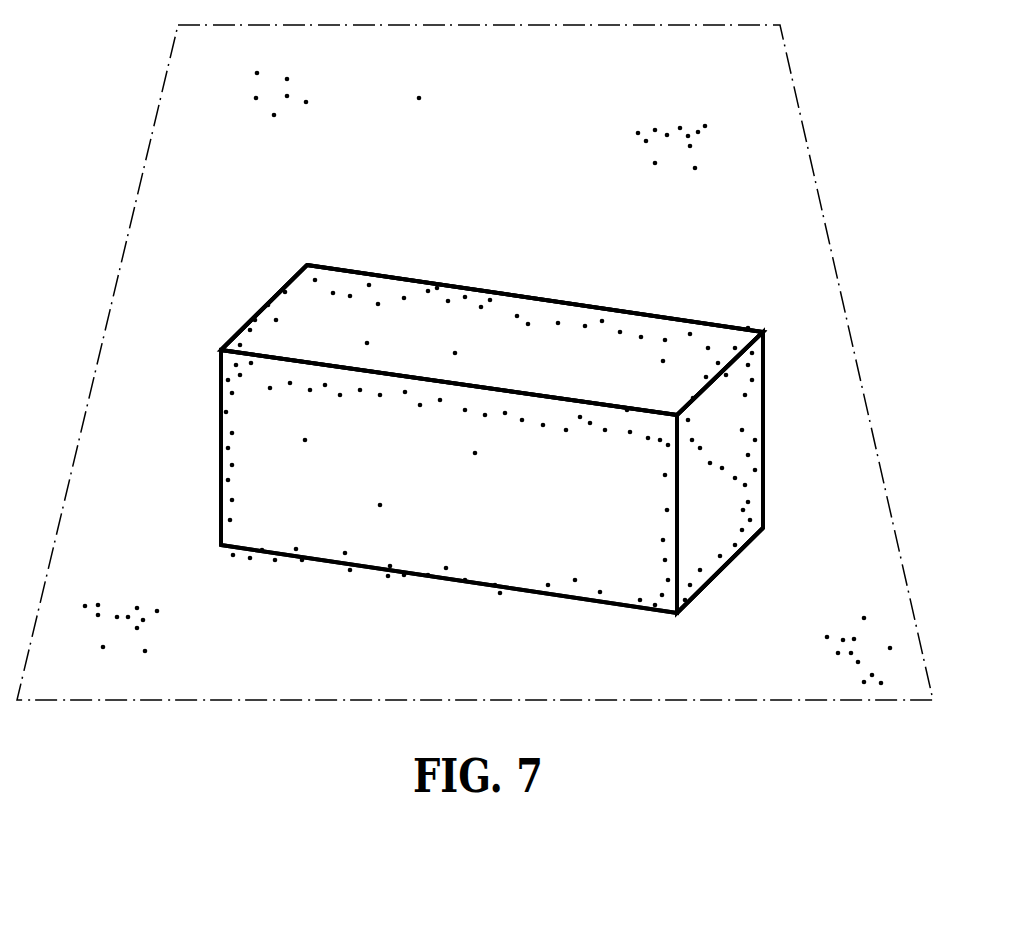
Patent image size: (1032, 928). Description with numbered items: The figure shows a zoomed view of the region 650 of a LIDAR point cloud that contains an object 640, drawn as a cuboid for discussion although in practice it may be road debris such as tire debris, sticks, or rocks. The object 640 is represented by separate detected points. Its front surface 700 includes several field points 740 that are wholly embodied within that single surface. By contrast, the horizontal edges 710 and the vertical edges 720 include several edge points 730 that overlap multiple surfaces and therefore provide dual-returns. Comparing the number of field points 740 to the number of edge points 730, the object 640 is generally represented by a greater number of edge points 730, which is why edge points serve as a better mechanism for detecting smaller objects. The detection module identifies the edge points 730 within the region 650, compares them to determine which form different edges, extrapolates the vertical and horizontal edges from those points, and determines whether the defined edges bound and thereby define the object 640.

The region 650 is at (818, 210).
The front surface 700 is at (550, 550).
The object 640 is at (410, 477).
The horizontal edges 710 is at (457, 384).
The vertical edges 720 is at (221, 466).
The edge points 730 is at (266, 304).
The field points 740 is at (568, 515).